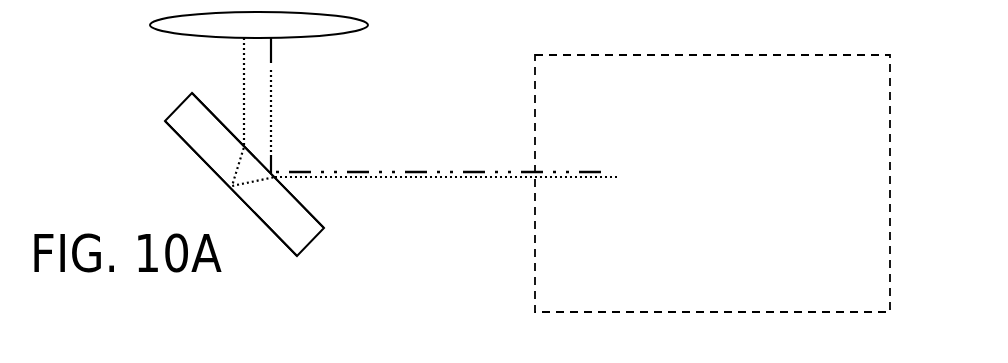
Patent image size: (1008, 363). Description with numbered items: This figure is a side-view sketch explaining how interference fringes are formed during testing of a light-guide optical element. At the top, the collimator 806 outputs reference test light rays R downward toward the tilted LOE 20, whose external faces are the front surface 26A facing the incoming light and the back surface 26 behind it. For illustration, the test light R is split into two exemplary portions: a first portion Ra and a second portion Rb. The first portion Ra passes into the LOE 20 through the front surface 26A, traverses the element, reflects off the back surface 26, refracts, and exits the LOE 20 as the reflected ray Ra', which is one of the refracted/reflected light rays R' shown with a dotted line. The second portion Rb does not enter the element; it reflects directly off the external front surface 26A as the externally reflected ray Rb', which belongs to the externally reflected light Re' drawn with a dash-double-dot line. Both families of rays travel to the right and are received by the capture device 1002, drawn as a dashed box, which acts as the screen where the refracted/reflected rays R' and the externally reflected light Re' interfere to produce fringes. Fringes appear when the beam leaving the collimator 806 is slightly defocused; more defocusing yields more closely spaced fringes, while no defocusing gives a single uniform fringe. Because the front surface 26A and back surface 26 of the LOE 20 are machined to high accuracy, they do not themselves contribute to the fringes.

The collimating optics 806 is at (259, 25).
The LOE 20 is at (244, 174).
The front surface 26A is at (311, 212).
The back surface 26 is at (285, 245).
The test light rays R is at (262, 53).
The first portion Ra is at (253, 112).
The second portion Rb is at (274, 121).
The reflected ray Ra' is at (447, 206).
The externally reflected ray Rb' is at (441, 144).
The externally reflected light Re' is at (510, 143).
The refracted/reflected light rays R' is at (506, 209).
The capture device 1002 is at (712, 183).